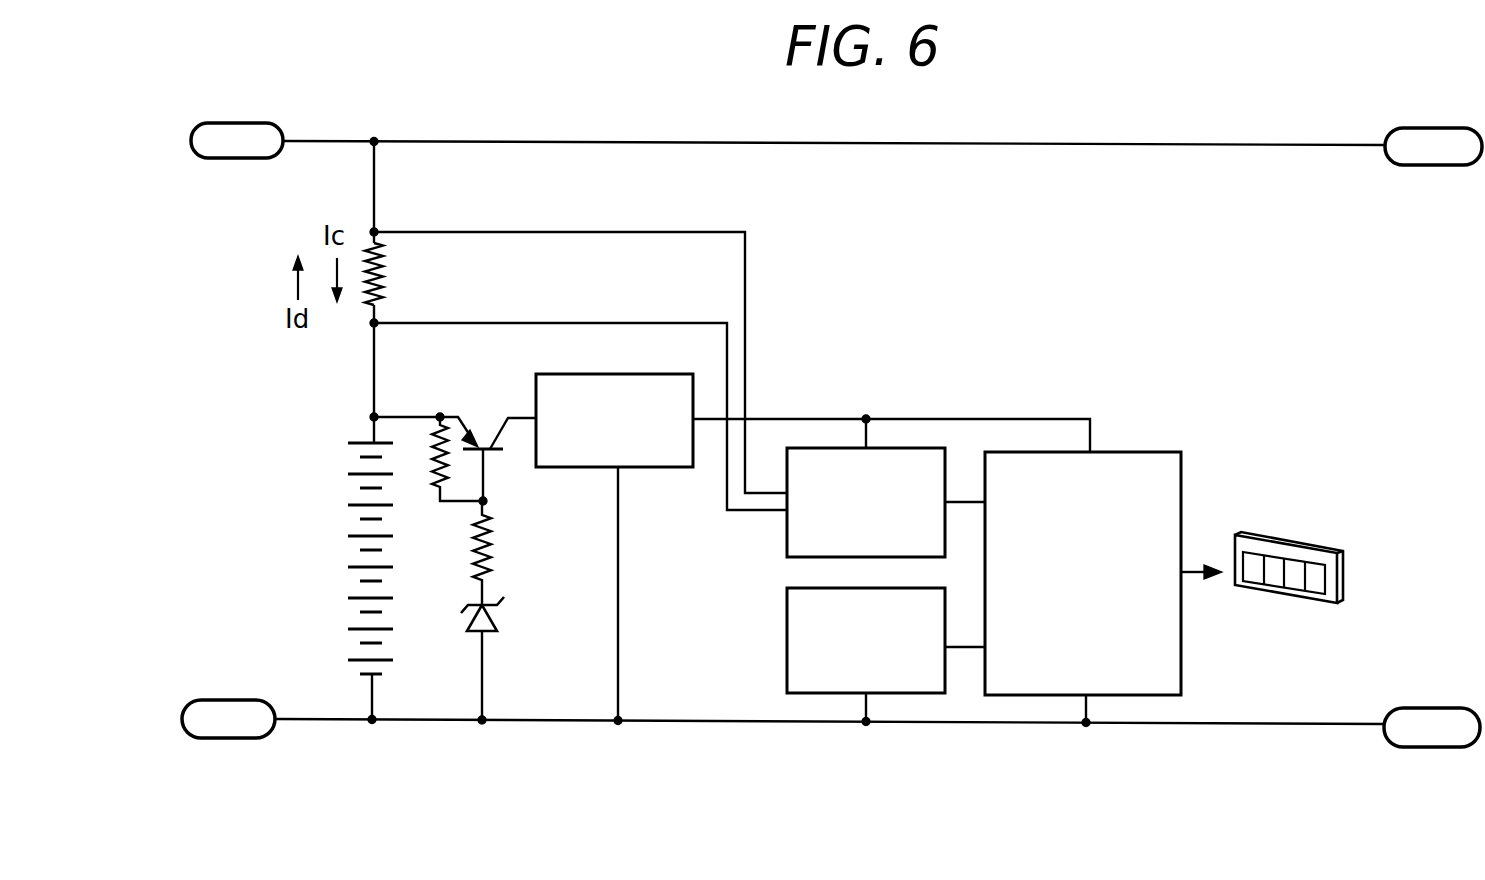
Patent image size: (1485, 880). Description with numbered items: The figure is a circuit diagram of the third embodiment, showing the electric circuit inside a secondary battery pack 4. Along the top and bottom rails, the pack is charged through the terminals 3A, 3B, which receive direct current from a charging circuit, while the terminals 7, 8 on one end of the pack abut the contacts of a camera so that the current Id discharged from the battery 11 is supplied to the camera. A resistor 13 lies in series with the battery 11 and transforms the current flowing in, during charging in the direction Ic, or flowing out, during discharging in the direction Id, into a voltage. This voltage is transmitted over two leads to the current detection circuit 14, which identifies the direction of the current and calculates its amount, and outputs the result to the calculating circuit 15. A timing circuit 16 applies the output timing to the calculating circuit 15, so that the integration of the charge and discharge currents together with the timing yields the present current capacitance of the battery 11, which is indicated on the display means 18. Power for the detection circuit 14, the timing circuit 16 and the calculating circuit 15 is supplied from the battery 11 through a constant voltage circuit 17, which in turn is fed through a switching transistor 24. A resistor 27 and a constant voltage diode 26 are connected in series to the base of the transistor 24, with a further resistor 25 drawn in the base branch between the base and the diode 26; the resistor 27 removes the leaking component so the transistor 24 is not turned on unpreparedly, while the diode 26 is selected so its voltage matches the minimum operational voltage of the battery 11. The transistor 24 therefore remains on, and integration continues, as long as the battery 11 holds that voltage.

The terminal 3A is at (222, 160).
The terminal 3B is at (231, 700).
The terminal 7 is at (1418, 156).
The terminal 8 is at (1432, 714).
The secondary battery pack 4 is at (1236, 740).
The battery 11 is at (345, 532).
The resistor 13 is at (385, 261).
The current detection circuit 14 is at (787, 536).
The calculating circuit 15 is at (1181, 462).
The timing circuit 16 is at (787, 676).
The constant voltage circuit 17 is at (663, 468).
The display means 18 is at (1310, 542).
The switching transistor 24 is at (484, 432).
The resistor 25 is at (495, 543).
The constant voltage diode 26 is at (497, 622).
The resistor 27 is at (437, 453).